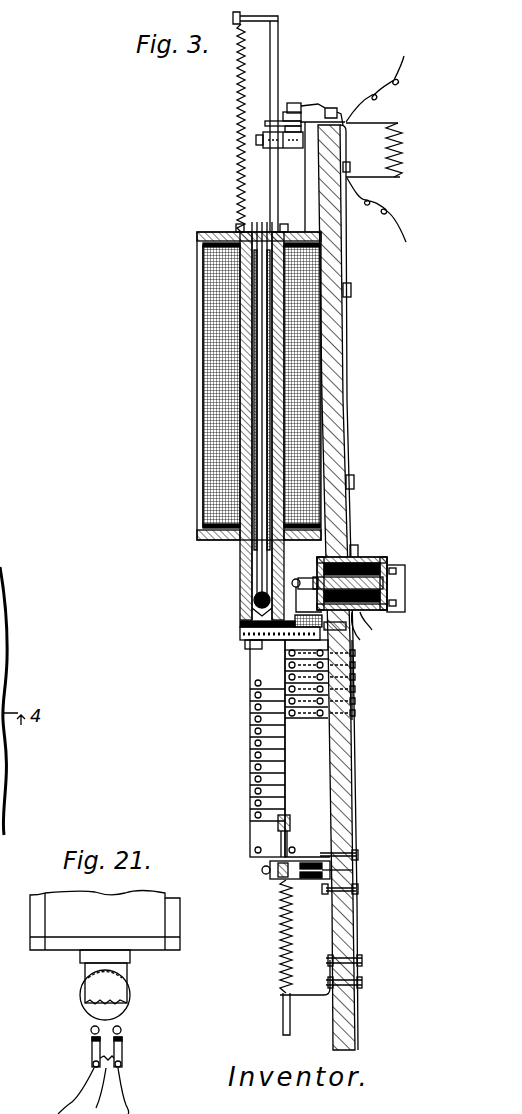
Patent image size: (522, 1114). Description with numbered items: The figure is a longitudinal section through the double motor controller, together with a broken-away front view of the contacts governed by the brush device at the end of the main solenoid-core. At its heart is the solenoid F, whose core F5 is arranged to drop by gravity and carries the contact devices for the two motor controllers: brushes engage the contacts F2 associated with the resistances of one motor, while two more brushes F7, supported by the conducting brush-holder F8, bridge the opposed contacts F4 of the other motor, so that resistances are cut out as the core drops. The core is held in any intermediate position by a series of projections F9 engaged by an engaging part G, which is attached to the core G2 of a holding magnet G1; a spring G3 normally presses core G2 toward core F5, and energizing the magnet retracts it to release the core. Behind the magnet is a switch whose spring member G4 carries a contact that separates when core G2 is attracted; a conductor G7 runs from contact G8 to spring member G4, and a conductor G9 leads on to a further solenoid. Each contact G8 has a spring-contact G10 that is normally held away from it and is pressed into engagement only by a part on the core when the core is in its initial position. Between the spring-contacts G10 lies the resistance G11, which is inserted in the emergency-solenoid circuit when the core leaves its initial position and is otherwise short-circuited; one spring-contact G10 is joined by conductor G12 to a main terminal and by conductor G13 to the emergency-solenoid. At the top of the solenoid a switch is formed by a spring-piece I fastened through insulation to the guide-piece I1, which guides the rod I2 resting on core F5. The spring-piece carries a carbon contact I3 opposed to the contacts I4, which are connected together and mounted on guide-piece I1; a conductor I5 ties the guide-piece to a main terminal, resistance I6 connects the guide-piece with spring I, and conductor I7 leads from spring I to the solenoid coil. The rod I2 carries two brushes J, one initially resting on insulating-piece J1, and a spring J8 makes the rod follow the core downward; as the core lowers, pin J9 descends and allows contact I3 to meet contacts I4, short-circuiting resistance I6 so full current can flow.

In FIG. 3, the solenoid F is at (238, 386).
In FIG. 21, the solenoid F is at (105, 921).
In FIG. 3, the contacts F2 is at (268, 760).
In FIG. 3, the contacts F4 is at (310, 700).
In FIG. 3, the core F5 is at (294, 365).
In FIG. 21, the core F5 is at (86, 972).
In FIG. 3, the brushes F7 is at (292, 648).
In FIG. 3, the brush-holder F8 is at (292, 634).
In FIG. 3, the projections F9 is at (348, 545).
In FIG. 3, the engaging part G is at (320, 580).
In FIG. 3, the holding magnet G1 is at (356, 616).
In FIG. 21, the holding magnet G1 is at (81, 996).
In FIG. 3, the core G2 is at (386, 558).
In FIG. 3, the spring G3 is at (360, 612).
In FIG. 3, the spring member G4 is at (398, 594).
In FIG. 3, the conductor G7 is at (352, 638).
In FIG. 3, the contact G8 is at (300, 622).
In FIG. 21, the contact G8 is at (91, 1030).
In FIG. 3, the conductor G9 is at (388, 557).
In FIG. 3, the spring-contact G10 is at (354, 682).
In FIG. 21, the spring-contact G10 is at (92, 1052).
In FIG. 21, the resistance G11 is at (95, 1091).
In FIG. 21, the conductor G12 is at (70, 1102).
In FIG. 21, the conductor G13 is at (126, 1098).
In FIG. 3, the spring-piece I is at (306, 130).
In FIG. 3, the guide-piece I1 is at (326, 118).
In FIG. 3, the rod I2 is at (279, 45).
In FIG. 3, the carbon contact I3 is at (292, 103).
In FIG. 3, the contacts I4 is at (284, 126).
In FIG. 3, the conductor I5 is at (392, 236).
In FIG. 3, the resistance I6 is at (388, 148).
In FIG. 3, the conductor I7 is at (386, 64).
In FIG. 3, the brushes J is at (306, 148).
In FIG. 3, the insulating-piece J1 is at (316, 162).
In FIG. 3, the spring J8 is at (238, 143).
In FIG. 3, the pin J9 is at (285, 120).